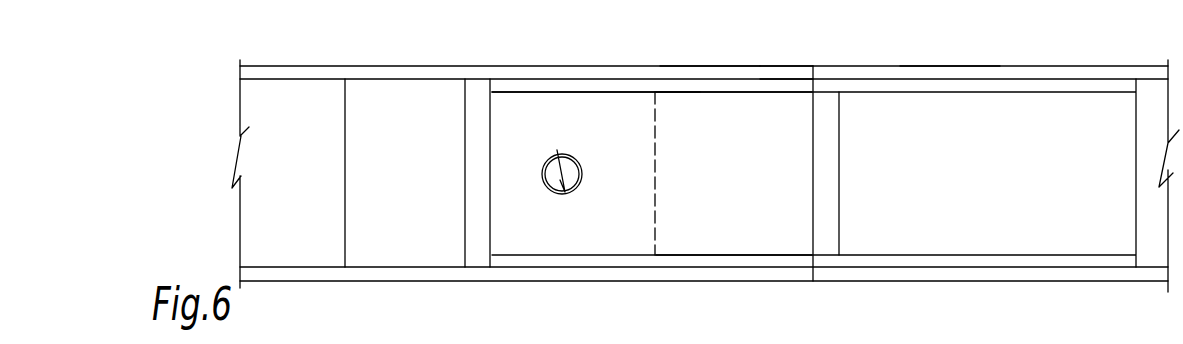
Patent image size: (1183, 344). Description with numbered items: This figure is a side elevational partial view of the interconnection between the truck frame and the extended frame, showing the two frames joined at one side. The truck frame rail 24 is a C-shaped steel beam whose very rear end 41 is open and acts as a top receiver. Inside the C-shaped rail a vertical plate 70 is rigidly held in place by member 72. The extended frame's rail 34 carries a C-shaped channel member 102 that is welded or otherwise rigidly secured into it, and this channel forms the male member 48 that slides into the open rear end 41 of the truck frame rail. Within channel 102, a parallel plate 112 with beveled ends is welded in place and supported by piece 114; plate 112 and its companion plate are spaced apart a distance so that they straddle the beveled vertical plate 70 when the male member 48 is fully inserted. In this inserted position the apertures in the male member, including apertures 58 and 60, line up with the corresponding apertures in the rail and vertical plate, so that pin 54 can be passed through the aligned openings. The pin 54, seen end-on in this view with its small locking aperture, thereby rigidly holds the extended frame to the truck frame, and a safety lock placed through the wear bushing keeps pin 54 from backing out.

The frame rail 24 is at (387, 70).
The frame rail 34 is at (934, 75).
The rear end 41 is at (768, 66).
The male member 48 is at (630, 85).
The pin 54 is at (568, 170).
The aperture 58 is at (565, 192).
The aperture 60 is at (561, 171).
The vertical plate 70 is at (655, 197).
The member 72 is at (476, 157).
The C-shaped channel member 102 is at (690, 70).
The plate 112 is at (712, 161).
The piece 114 is at (825, 122).